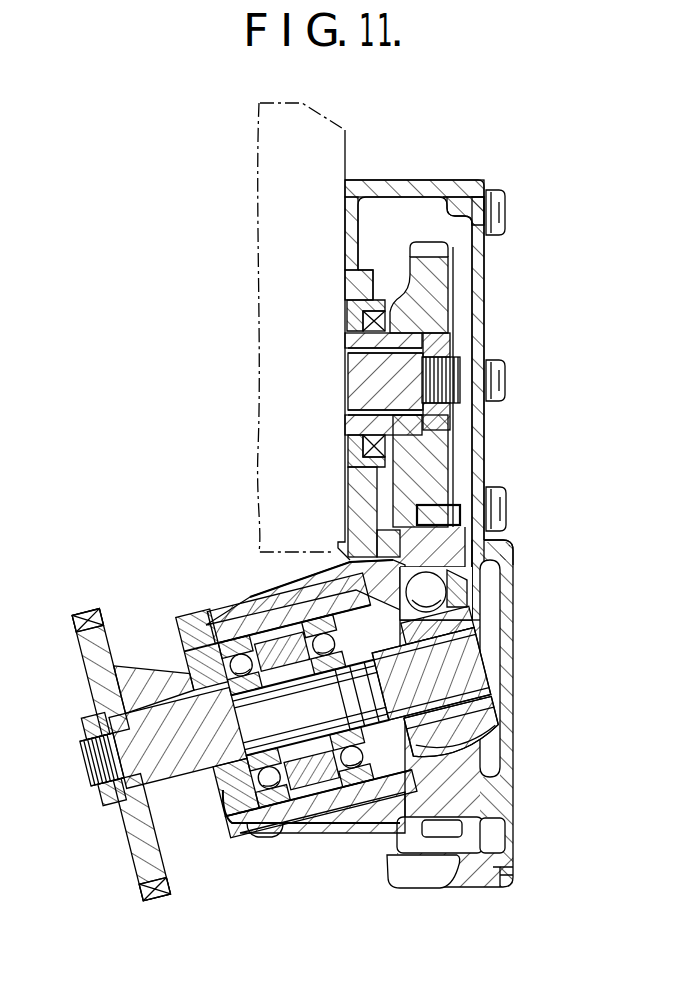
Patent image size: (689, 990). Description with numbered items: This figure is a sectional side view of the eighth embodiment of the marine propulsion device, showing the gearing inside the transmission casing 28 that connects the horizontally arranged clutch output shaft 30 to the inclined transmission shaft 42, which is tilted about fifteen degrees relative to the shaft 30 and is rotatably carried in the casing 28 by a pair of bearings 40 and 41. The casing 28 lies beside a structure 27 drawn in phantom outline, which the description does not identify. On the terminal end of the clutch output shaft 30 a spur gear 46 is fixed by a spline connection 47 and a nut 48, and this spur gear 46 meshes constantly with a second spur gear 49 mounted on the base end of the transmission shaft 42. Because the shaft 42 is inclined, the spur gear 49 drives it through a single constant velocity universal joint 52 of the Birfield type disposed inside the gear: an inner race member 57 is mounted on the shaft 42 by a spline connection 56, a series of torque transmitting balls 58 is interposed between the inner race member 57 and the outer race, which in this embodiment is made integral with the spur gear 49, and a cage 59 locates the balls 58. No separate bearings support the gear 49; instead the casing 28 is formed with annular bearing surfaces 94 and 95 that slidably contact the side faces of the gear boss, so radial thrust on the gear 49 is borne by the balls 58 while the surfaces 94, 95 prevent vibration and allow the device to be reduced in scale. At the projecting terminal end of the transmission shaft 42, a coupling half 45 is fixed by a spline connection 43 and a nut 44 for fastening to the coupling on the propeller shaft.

The engine block 27 is at (318, 153).
The transmission casing 28 is at (393, 180).
The clutch output shaft 30 is at (365, 372).
The bearing 40 is at (330, 557).
The bearing 41 is at (230, 603).
The transmission shaft 42 is at (303, 790).
The spline connection 43 is at (160, 700).
The nut 44 is at (110, 797).
The coupling half 45 is at (90, 613).
The spur gear 46 is at (423, 247).
The spline connection 47 is at (348, 343).
The nut 48 is at (443, 333).
The spur gear 49 is at (438, 838).
The constant velocity universal joint 52 is at (487, 692).
The spline connection 56 is at (512, 615).
The inner race member 57 is at (457, 715).
The torque transmitting balls 58 is at (407, 581).
The ball retaining member or cage 59 is at (513, 762).
The annular bearing surface 94 is at (393, 858).
The annular bearing surface 95 is at (493, 542).